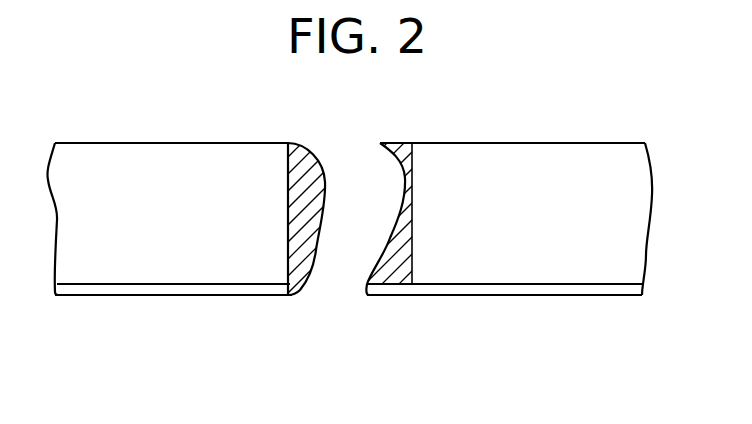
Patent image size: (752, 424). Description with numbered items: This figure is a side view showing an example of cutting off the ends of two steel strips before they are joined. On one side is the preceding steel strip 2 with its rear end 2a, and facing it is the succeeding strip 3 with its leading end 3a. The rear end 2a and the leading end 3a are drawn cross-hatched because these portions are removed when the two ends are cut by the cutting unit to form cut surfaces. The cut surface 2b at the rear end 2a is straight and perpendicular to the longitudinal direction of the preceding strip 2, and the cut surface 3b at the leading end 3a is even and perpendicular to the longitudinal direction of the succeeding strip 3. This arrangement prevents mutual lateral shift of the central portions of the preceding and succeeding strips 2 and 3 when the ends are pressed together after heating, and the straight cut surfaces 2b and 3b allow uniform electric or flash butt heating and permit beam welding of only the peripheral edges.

The preceding steel strip 2 is at (552, 145).
The rear end of the preceding strip 2a is at (393, 145).
The cut surface at the rear end 2b is at (412, 263).
The succeeding strip 3 is at (155, 145).
The leading end of the succeeding strip 3a is at (307, 145).
The cut surface at the leading end 3b is at (288, 265).